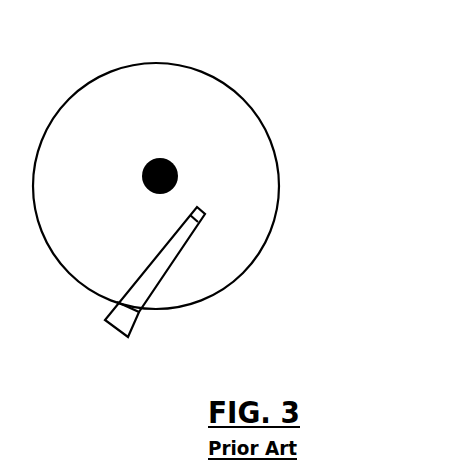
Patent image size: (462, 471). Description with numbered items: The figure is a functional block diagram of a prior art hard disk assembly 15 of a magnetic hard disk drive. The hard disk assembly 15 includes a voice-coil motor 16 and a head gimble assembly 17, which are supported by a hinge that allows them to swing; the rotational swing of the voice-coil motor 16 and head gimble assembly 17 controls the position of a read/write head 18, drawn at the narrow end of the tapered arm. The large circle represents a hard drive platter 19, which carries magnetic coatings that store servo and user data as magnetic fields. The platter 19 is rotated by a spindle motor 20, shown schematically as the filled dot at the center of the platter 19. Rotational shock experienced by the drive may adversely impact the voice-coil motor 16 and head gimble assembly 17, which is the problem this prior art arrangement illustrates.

The hard disk assembly 15 is at (330, 122).
The voice-coil motor 16 is at (107, 318).
The head gimble assembly 17 is at (148, 268).
The read/write head 18 is at (203, 219).
The hard drive platter 19 is at (178, 63).
The spindle motor 20 is at (168, 159).